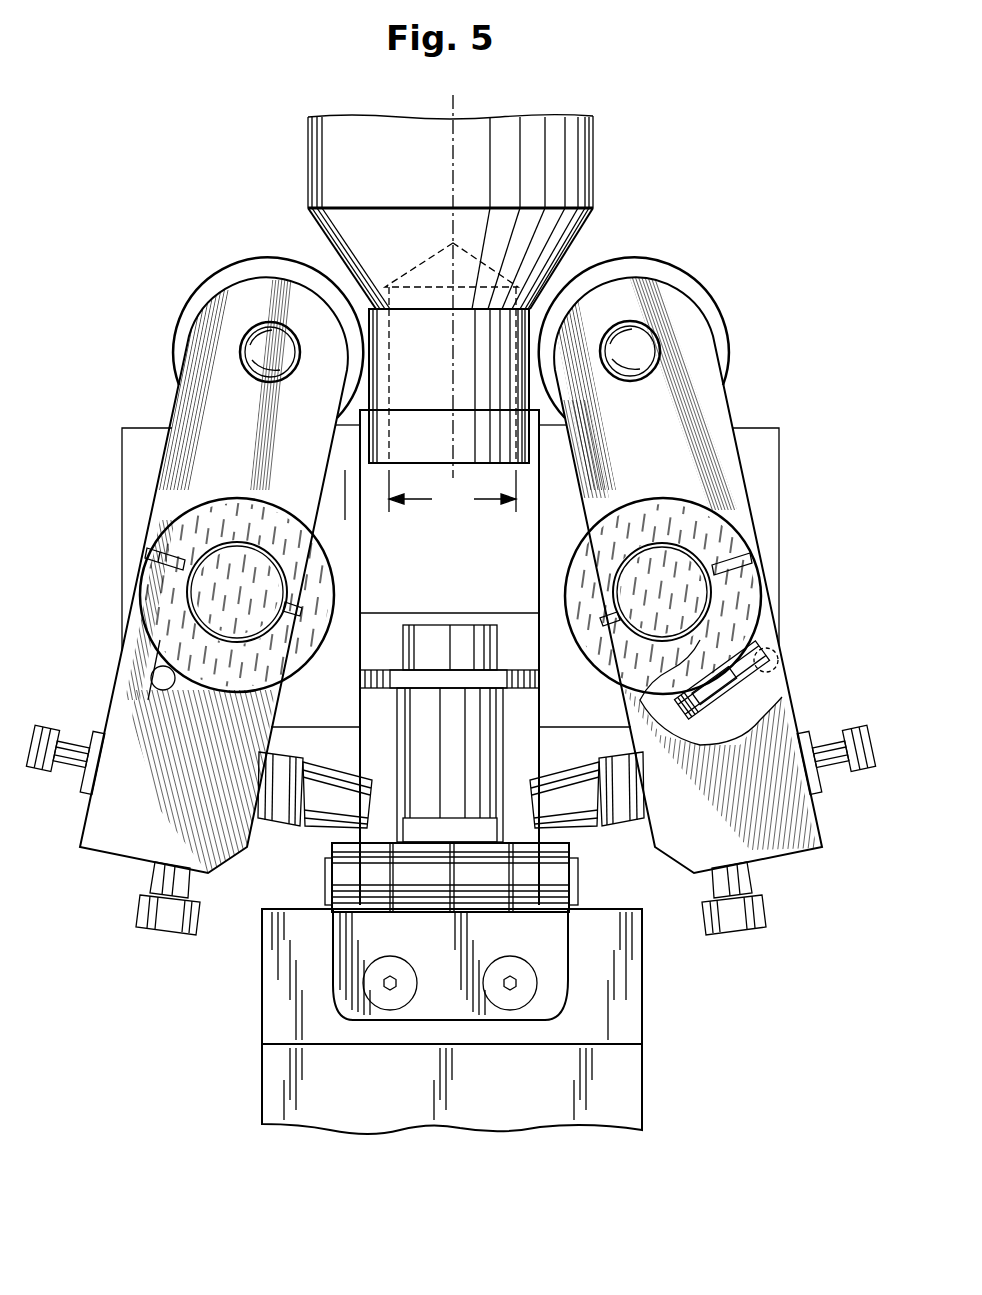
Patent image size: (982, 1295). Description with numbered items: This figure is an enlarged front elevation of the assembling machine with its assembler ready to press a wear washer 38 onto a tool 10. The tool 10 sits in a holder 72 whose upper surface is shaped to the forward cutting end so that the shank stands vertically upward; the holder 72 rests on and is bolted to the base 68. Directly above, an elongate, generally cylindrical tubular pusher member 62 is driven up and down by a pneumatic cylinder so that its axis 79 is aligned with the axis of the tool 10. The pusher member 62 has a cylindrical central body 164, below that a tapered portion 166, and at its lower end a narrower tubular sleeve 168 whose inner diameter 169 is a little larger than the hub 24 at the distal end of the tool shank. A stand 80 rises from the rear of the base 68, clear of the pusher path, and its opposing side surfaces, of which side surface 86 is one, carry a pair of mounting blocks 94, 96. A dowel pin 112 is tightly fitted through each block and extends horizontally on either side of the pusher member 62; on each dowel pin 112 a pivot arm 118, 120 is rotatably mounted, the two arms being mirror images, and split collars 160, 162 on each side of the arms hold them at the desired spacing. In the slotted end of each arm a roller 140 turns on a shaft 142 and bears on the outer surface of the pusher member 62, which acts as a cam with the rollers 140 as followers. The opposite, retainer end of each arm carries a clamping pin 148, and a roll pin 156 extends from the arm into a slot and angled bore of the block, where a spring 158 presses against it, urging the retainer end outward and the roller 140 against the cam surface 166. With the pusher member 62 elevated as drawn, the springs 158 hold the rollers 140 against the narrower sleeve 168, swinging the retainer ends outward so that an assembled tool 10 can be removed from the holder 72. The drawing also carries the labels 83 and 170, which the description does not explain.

The tool 10 is at (628, 742).
The hub 24 is at (452, 625).
The wear washer 38 is at (525, 672).
The tubular pusher member 62 is at (288, 118).
The base 68 is at (262, 1096).
The holder 72 is at (262, 970).
The axis of the tubular pusher member 79 is at (448, 137).
The stand 80 is at (342, 491).
The central body 83 is at (376, 612).
The side surface 86 is at (340, 417).
The mounting block 94 is at (148, 427).
The mounting block 96 is at (742, 427).
The dowel pin 112 is at (188, 598).
The pivot arm 118 is at (735, 452).
The pivot arm 120 is at (147, 518).
The roller 140 is at (193, 291).
The shaft 142 is at (240, 350).
The clamping pin 148 is at (318, 826).
The roll pin 156 is at (160, 684).
The spring 158 is at (738, 700).
The split collar 160 is at (152, 648).
The split collar 162 is at (695, 500).
The cylindrical central body 164 is at (307, 164).
The tapered portion 166 is at (578, 230).
The tubular sleeve 168 is at (323, 305).
The inner diameter 169 is at (452, 491).
The roller strip 170 is at (330, 874).